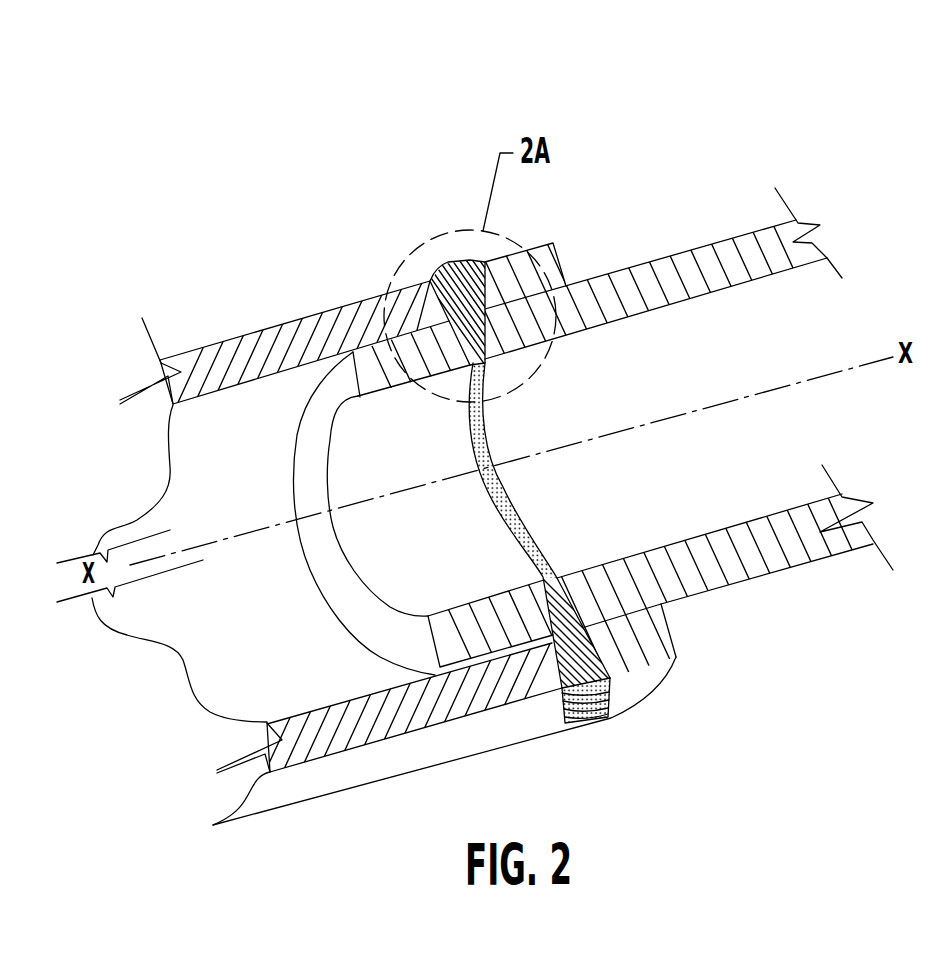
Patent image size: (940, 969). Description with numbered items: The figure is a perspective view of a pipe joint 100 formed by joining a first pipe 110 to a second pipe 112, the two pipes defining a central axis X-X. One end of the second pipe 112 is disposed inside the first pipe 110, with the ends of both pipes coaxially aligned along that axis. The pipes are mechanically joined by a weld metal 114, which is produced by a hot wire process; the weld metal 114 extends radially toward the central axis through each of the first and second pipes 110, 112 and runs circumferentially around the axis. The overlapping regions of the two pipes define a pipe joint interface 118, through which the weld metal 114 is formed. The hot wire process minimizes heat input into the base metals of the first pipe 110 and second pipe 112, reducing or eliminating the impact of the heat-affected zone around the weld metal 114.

The pipe joint 100 is at (650, 112).
The first pipe 110 is at (247, 334).
The second pipe 112 is at (707, 246).
The weld metal 114 is at (452, 282).
The pipe joint interface 118 is at (558, 267).